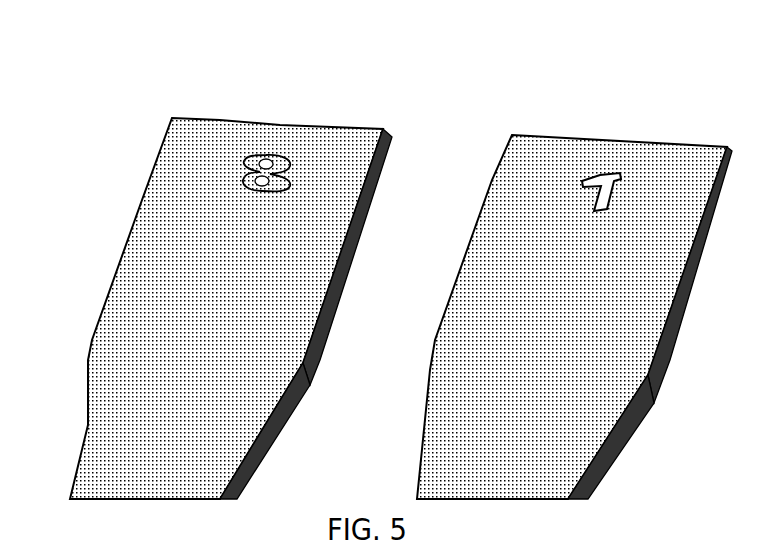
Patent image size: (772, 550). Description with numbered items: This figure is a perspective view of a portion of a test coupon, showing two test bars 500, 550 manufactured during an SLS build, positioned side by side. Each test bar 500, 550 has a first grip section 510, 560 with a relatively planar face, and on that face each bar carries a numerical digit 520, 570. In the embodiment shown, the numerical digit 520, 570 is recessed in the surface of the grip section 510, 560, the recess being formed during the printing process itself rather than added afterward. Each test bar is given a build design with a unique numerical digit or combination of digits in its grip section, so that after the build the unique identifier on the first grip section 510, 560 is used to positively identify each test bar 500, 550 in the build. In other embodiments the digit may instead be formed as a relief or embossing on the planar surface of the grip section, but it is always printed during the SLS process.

The test bar 500 is at (245, 264).
The first grip section 510 is at (367, 140).
The numerical digit 520 is at (287, 157).
The test bar 550 is at (574, 272).
The first grip section 560 is at (662, 174).
The numerical digit 570 is at (595, 172).